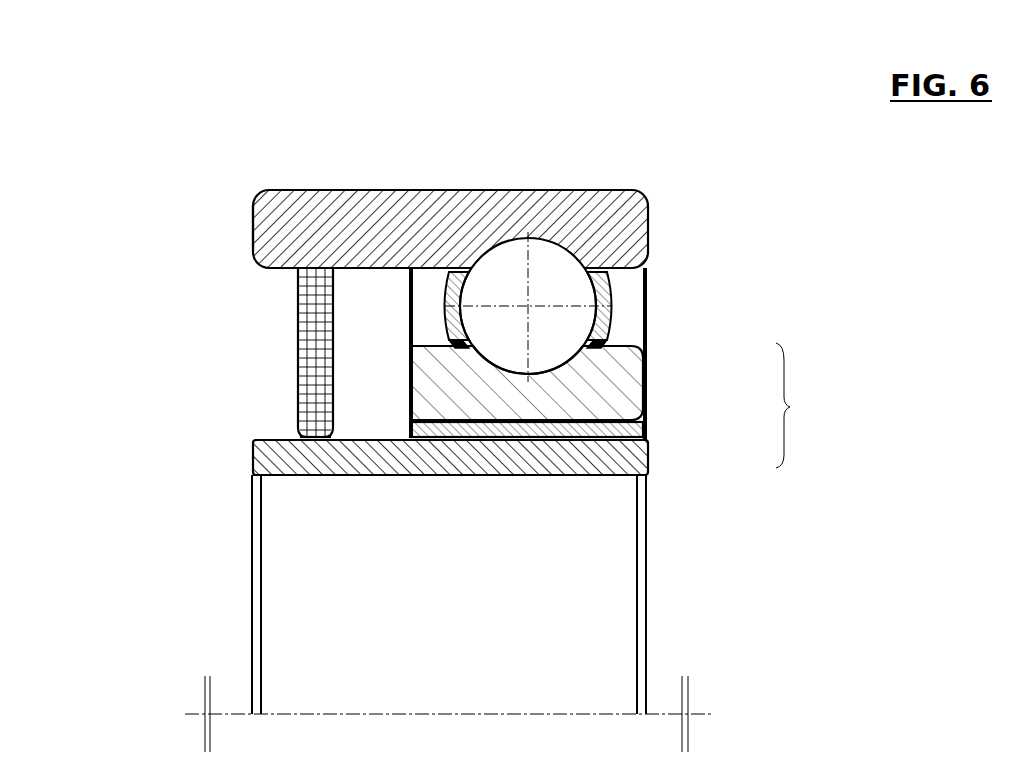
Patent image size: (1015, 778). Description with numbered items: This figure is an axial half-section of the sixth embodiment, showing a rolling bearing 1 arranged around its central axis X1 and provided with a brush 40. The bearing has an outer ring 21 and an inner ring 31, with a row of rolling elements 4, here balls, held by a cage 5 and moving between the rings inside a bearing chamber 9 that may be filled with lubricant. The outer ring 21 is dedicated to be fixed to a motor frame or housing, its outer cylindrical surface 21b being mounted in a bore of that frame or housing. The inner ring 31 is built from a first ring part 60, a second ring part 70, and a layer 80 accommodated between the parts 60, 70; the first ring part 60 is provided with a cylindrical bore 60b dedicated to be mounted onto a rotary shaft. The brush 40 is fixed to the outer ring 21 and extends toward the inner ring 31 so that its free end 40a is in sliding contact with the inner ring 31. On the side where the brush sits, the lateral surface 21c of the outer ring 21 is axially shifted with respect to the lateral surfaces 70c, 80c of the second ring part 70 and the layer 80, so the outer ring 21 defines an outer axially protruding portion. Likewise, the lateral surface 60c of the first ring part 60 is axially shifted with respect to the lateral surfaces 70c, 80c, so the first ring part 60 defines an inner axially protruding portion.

The rolling bearing 1 is at (342, 136).
The rolling elements 4 is at (506, 298).
The cage 5 is at (620, 287).
The bearing chamber 9 is at (625, 321).
The outer ring 21 is at (650, 201).
The outer cylindrical surface 21b is at (298, 190).
The lateral surface 21c is at (253, 211).
The inner ring 31 is at (798, 405).
The brush 40 is at (298, 297).
The free end 40a is at (312, 470).
The first ring part 60 is at (647, 463).
The cylindrical bore 60b is at (330, 477).
The lateral surface 60c is at (253, 455).
The second ring part 70 is at (647, 380).
The lateral surface 70c is at (411, 367).
The layer 80 is at (647, 432).
The lateral surface 80c is at (411, 430).
The central axis X1 is at (454, 714).